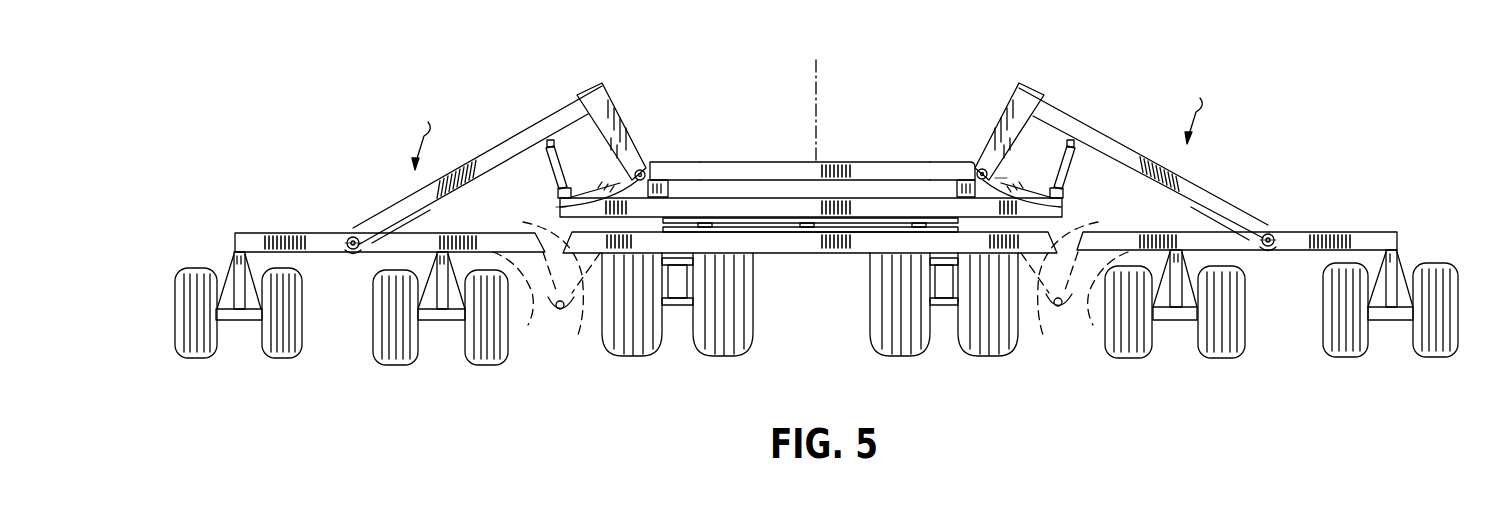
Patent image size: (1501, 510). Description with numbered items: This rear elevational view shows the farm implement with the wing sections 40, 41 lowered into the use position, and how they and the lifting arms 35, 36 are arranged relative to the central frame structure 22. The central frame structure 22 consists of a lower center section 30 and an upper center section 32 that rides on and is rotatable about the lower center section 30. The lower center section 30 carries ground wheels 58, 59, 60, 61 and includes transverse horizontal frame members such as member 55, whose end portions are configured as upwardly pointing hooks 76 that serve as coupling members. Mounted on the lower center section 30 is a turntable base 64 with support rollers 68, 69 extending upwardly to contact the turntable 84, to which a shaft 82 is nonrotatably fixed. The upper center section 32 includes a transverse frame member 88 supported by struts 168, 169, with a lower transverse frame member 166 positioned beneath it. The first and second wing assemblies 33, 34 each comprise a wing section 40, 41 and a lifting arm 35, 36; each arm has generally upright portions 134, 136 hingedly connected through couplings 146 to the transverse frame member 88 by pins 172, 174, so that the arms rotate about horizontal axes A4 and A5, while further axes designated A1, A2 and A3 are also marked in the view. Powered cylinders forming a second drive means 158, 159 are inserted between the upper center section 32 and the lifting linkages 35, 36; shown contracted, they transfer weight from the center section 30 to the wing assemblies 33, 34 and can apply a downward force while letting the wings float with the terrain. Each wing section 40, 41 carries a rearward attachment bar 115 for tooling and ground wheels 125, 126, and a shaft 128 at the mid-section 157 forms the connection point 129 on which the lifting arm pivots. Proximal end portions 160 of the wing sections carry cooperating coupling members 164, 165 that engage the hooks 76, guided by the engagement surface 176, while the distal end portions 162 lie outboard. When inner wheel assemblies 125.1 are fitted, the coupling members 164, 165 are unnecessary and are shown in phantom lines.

The central frame structure 22 is at (811, 150).
The lower center section 30 is at (770, 240).
The upper center section 32 is at (744, 161).
The first wing assembly 33 is at (429, 132).
The second wing assembly 34 is at (1202, 107).
The first lifting linkage 35 is at (552, 120).
The second lifting linkage 36 is at (1110, 143).
The first wing section 40 is at (423, 212).
The second wing section 41 is at (1298, 232).
The transverse horizontal frame member 55 is at (658, 254).
The ground wheel 58 is at (648, 358).
The ground wheel 59 is at (718, 357).
The ground wheel 60 is at (898, 357).
The ground wheel 61 is at (989, 357).
The turntable base 64 is at (862, 240).
The support roller 68 is at (913, 233).
The support roller 69 is at (706, 233).
The hook 76 is at (573, 312).
The shaft 82 is at (809, 224).
The turntable 84 is at (796, 233).
The transverse frame member 88 is at (690, 165).
The rearward attachment bar 115 is at (816, 262).
The ground wheel 125 is at (206, 358).
The inner wheel assembly 125.1 is at (459, 322).
The ground wheel 126 is at (293, 357).
The shaft 128 is at (353, 236).
The hinge connection point 129 is at (354, 250).
The upright portion 134 is at (603, 93).
The upright portion 136 is at (1013, 93).
The coupling 146 is at (630, 163).
The mid-section 157 is at (373, 240).
The powered cylinder 158 is at (545, 171).
The powered cylinder 159 is at (1073, 188).
The proximal end portion 160 is at (1063, 310).
The distal end portion 162 is at (252, 240).
The cooperating coupling member 164 is at (554, 310).
The cooperating coupling member 165 is at (1043, 318).
The lower transverse frame member 166 is at (768, 207).
The strut 168 is at (655, 179).
The strut 169 is at (958, 162).
The pin 172 is at (645, 168).
The pin 174 is at (982, 166).
The engagement surface 176 is at (1088, 227).
The center axis A1 is at (816, 86).
The left pivot axis A2 is at (345, 249).
The right pivot axis A3 is at (1275, 248).
The horizontal axis of rotation A4 is at (560, 207).
The horizontal axis of rotation A5 is at (1005, 178).